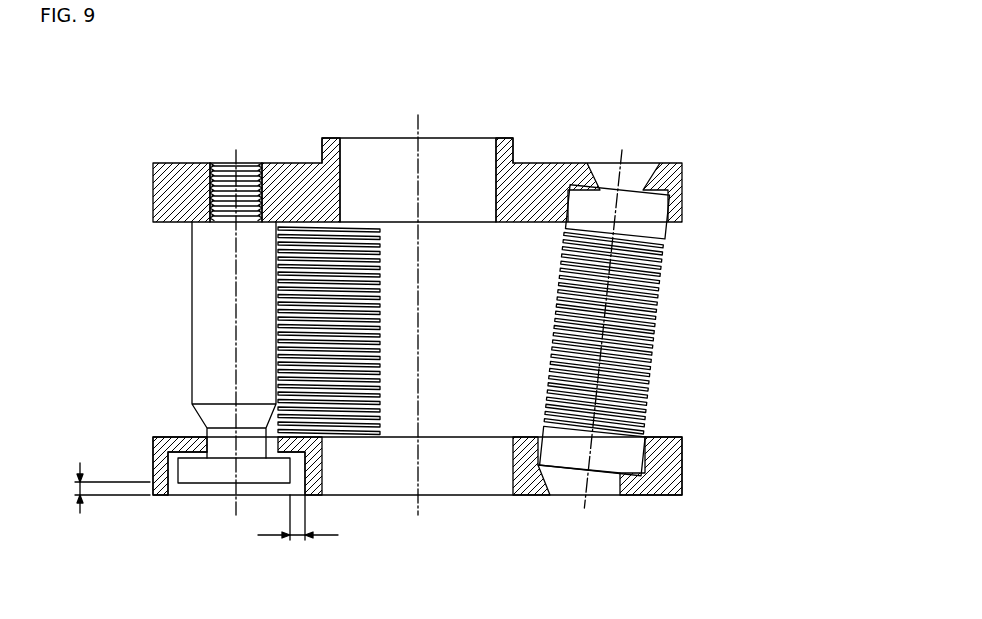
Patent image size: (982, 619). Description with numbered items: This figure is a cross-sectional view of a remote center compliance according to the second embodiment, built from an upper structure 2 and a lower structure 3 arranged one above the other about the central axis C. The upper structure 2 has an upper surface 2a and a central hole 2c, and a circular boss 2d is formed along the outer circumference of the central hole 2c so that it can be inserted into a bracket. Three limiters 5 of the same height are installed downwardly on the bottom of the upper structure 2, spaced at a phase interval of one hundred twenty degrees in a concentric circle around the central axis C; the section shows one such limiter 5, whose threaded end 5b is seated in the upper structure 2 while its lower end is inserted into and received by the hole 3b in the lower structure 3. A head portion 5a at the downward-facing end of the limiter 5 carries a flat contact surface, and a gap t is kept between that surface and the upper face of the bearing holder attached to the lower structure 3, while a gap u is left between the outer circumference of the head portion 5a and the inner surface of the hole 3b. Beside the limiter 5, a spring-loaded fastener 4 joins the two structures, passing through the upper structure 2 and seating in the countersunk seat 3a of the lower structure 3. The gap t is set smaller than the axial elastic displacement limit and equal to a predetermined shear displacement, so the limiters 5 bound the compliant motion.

The upper structure 2 is at (687, 196).
The upper surface of the upper structure 2a is at (193, 163).
The central hole 2c is at (352, 157).
The circular boss 2d is at (513, 143).
The central axis C is at (425, 152).
The limiter 5 is at (188, 316).
The head portion 5a is at (226, 468).
The threaded portion of pin 5b is at (212, 192).
The bolt with spring 4 is at (664, 327).
The lower structure 3 is at (150, 443).
The seat hole of lower plate 3a is at (513, 467).
The hole in the lower structure 3b is at (255, 496).
The gap t is at (100, 488).
The gap u is at (298, 530).